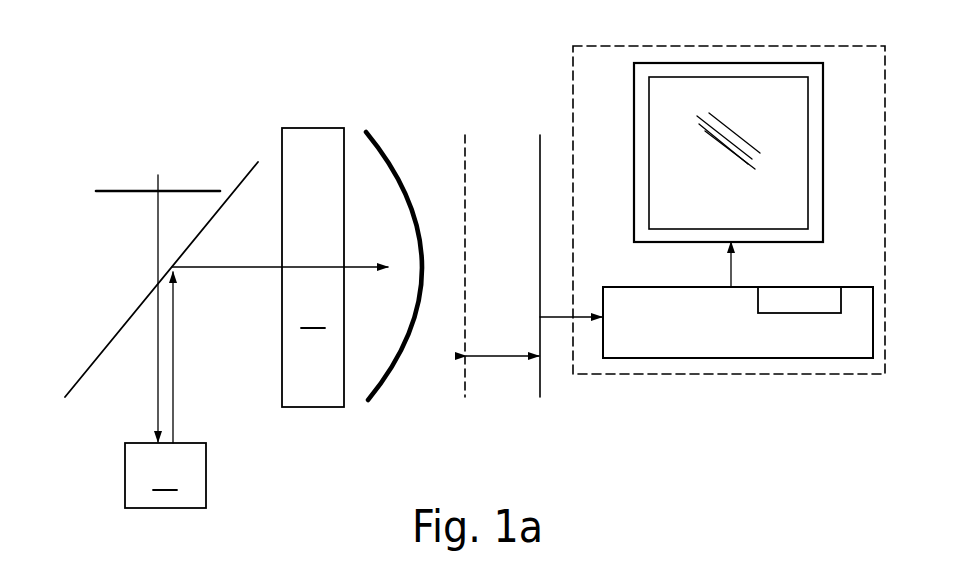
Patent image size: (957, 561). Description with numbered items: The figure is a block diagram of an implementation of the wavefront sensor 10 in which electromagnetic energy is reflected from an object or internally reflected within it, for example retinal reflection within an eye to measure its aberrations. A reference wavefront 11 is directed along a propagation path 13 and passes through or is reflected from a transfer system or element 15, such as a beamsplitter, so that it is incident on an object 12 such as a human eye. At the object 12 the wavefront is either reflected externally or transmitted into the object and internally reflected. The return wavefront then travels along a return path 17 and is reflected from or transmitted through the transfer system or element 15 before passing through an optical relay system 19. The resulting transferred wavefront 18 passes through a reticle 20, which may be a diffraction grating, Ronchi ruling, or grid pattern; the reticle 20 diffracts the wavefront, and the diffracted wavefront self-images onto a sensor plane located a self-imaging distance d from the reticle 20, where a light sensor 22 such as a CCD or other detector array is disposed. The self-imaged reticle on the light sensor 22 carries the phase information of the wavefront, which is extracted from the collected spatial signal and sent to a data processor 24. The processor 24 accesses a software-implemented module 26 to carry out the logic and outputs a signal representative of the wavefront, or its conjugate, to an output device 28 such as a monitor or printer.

The wavefront sensor 10 is at (140, 85).
The reference wavefront 11 is at (190, 190).
The object 12 is at (165, 475).
The propagation path 13 is at (158, 228).
The transfer system or element 15 is at (80, 381).
The return path 17 is at (228, 283).
The transferred wavefront 18 is at (369, 401).
The optical relay system 19 is at (313, 267).
The reticle 20 is at (465, 382).
The light sensor 22 is at (540, 390).
The data processor 24 is at (793, 360).
The software-implemented module 26 is at (831, 293).
The output device 28 is at (823, 130).
The self-imaging distance d is at (500, 358).